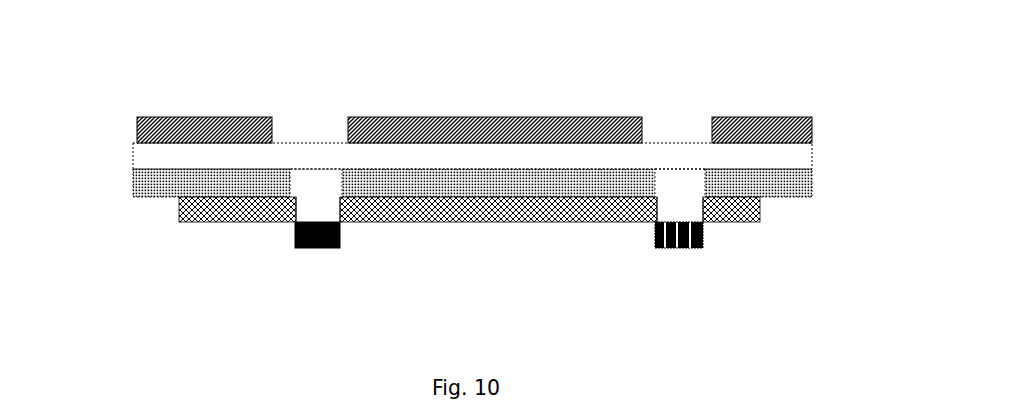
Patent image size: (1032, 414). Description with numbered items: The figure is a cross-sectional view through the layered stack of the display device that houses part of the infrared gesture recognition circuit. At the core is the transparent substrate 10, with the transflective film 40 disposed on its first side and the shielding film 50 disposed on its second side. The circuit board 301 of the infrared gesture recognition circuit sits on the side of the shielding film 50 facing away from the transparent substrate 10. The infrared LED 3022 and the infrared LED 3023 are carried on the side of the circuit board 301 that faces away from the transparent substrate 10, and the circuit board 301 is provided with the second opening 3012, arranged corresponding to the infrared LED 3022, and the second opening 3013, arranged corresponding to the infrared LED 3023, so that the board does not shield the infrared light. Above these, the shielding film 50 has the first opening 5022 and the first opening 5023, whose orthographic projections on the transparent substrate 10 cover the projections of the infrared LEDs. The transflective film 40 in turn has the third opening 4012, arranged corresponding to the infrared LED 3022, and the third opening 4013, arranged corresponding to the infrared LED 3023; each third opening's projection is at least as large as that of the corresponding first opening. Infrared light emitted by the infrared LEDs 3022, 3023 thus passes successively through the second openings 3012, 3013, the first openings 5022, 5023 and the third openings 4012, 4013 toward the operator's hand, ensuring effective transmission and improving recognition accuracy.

The transparent substrate 10 is at (812, 153).
The transflective film 40 is at (527, 76).
The third opening 4012 is at (287, 125).
The third opening 4013 is at (663, 125).
The shielding film 50 is at (414, 116).
The first opening 5022 is at (316, 182).
The first opening 5023 is at (677, 183).
The circuit board 301 is at (509, 260).
The infrared LED 3022 is at (297, 240).
The infrared LED 3023 is at (705, 235).
The second opening 3012 is at (322, 212).
The second opening 3013 is at (679, 205).